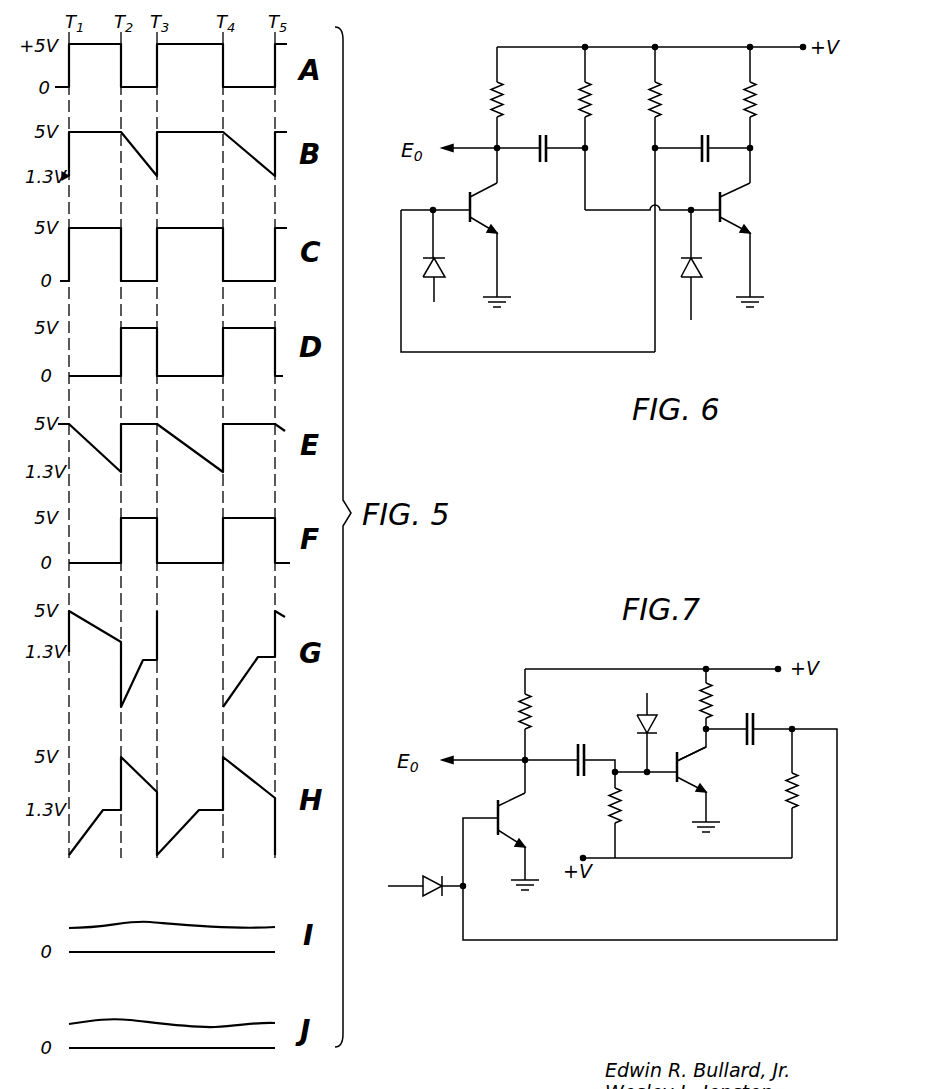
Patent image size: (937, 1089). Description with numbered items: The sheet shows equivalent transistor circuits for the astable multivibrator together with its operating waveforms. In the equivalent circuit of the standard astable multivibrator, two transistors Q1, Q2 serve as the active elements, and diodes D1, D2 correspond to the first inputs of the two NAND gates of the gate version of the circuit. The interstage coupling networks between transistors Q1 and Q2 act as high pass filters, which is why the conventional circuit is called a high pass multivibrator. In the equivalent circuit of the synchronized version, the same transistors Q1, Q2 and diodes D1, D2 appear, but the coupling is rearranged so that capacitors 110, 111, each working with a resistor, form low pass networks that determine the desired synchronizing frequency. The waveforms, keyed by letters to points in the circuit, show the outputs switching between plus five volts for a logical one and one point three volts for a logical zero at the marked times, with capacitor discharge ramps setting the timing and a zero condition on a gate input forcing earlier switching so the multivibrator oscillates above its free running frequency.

In FIG. 6, the capacitor 110 is at (547, 157).
In FIG. 7, the capacitor 110 is at (576, 767).
In FIG. 6, the capacitor 111 is at (698, 158).
In FIG. 7, the capacitor 111 is at (755, 718).
In FIG. 6, the transistor Q1 is at (492, 245).
In FIG. 7, the transistor Q1 is at (520, 841).
In FIG. 6, the transistor Q2 is at (745, 245).
In FIG. 7, the transistor Q2 is at (699, 789).
In FIG. 6, the diode D1 is at (444, 259).
In FIG. 7, the diode D1 is at (425, 895).
In FIG. 6, the diode D2 is at (701, 265).
In FIG. 7, the diode D2 is at (658, 730).